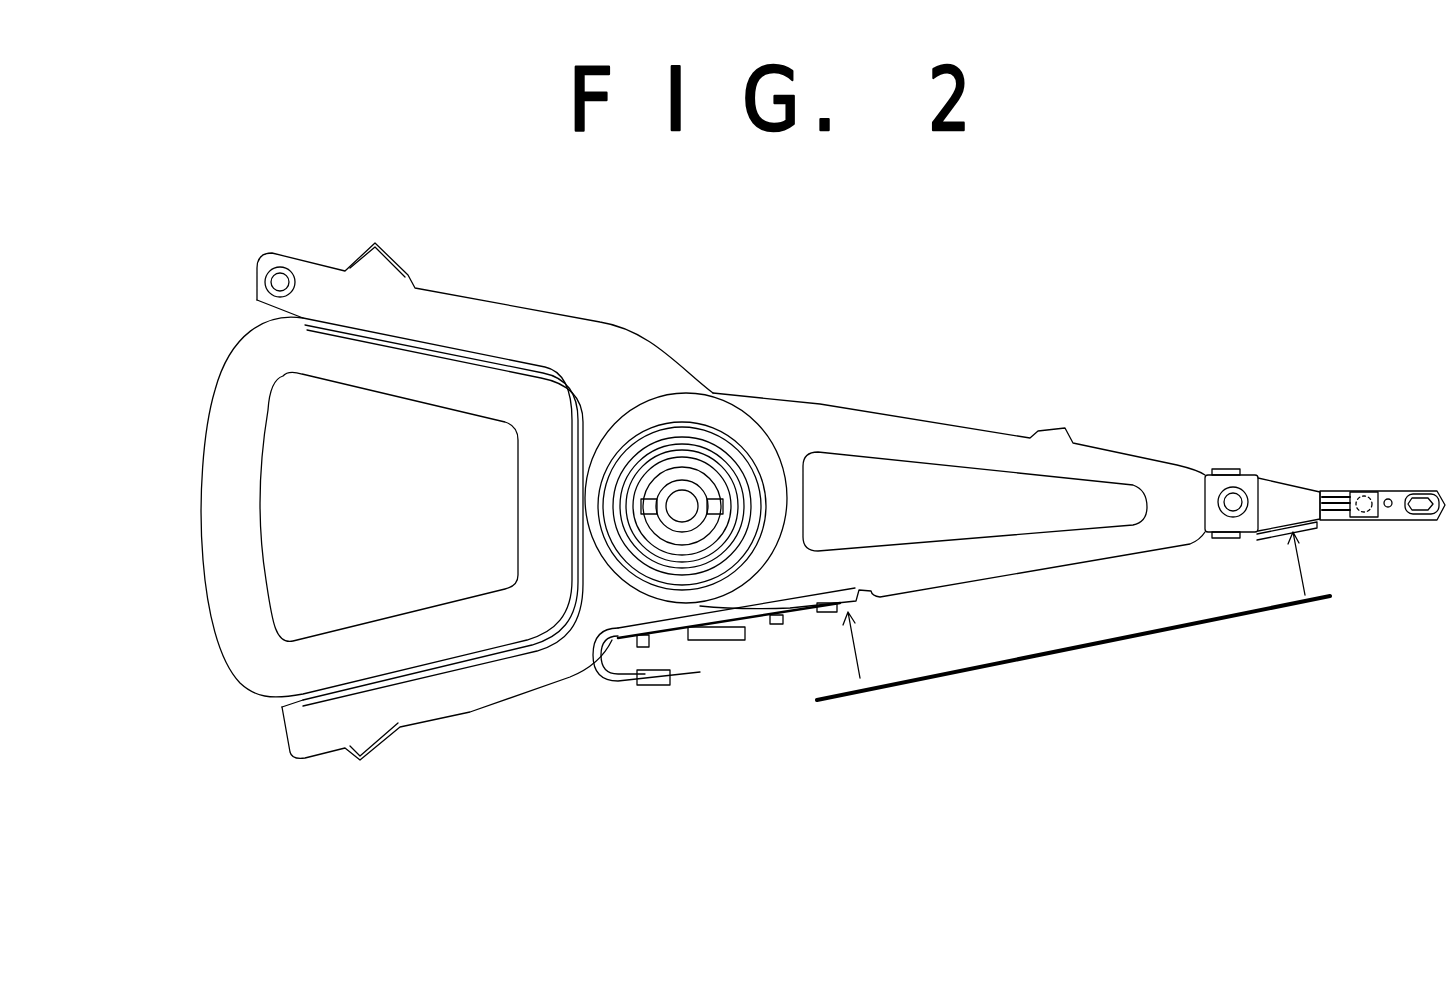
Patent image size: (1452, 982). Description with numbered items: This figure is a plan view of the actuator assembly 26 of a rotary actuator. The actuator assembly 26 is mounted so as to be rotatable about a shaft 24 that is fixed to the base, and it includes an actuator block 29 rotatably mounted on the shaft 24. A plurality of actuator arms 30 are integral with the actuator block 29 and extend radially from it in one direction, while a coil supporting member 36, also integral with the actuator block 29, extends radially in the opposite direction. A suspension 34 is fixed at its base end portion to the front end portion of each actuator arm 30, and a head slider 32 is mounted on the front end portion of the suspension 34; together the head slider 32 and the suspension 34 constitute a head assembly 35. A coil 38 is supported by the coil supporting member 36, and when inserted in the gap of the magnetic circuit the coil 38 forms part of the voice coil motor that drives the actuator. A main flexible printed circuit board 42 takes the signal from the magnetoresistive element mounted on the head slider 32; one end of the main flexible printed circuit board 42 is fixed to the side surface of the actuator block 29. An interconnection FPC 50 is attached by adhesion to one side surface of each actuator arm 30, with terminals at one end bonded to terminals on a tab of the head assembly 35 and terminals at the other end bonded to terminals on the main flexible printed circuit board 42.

The shaft 24 is at (684, 499).
The actuator assembly 26 is at (919, 399).
The actuator block 29 is at (640, 408).
The actuator arm 30 is at (988, 447).
The head slider 32 is at (1417, 485).
The suspension 34 is at (1373, 519).
The head assembly 35 is at (1363, 478).
The coil supporting member 36 is at (462, 697).
The coil 38 is at (222, 519).
The main flexible printed circuit board 42 is at (775, 630).
The interconnection FPC 50 is at (1093, 648).